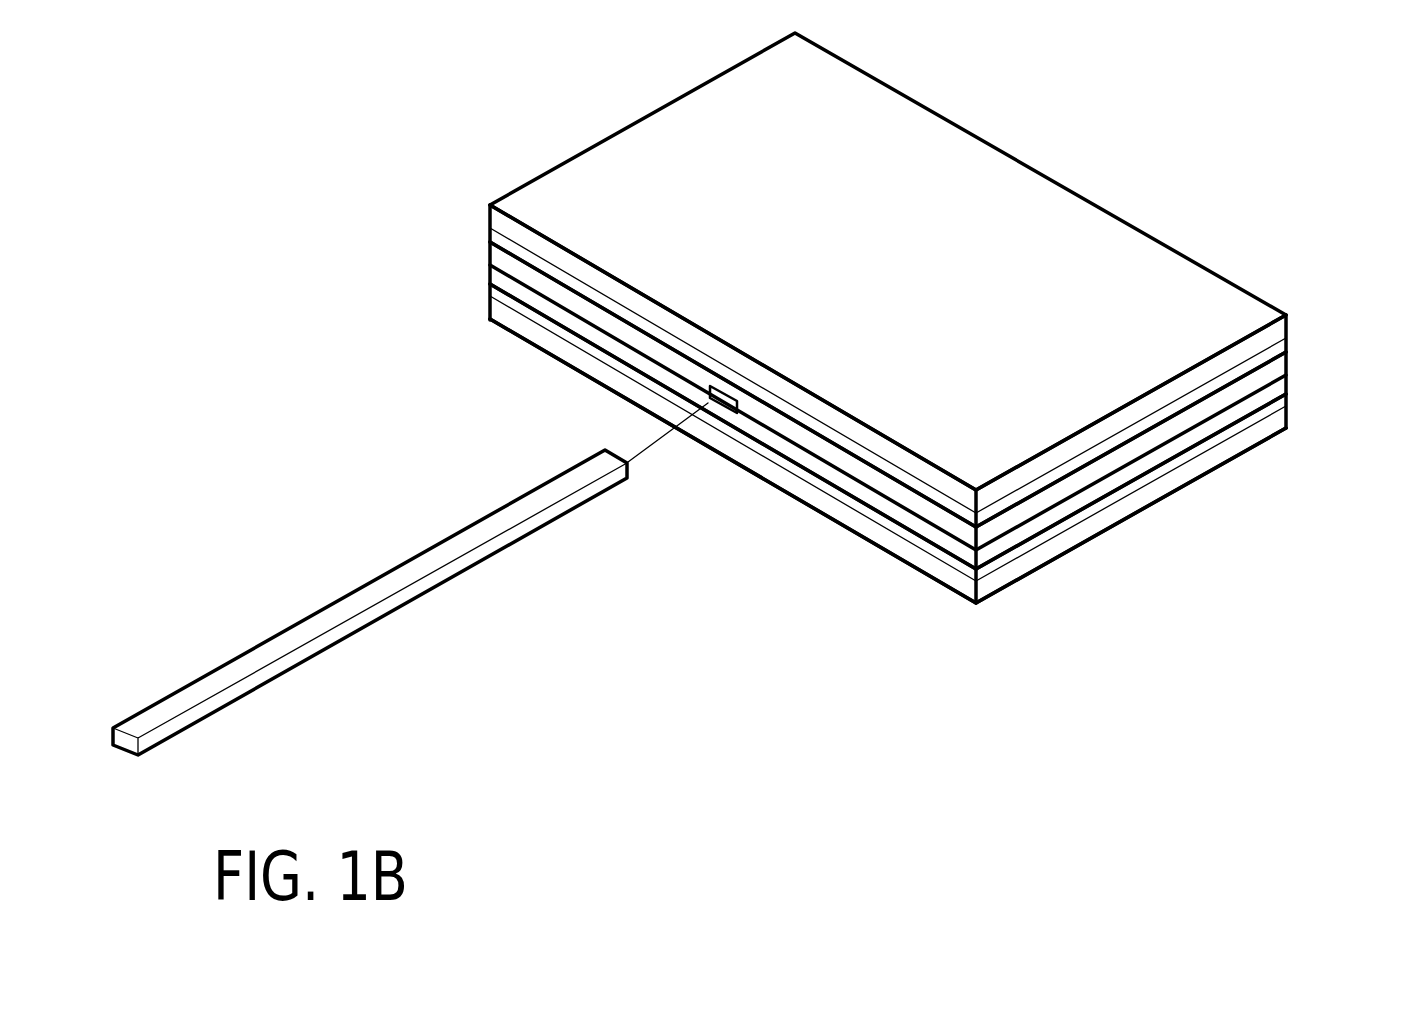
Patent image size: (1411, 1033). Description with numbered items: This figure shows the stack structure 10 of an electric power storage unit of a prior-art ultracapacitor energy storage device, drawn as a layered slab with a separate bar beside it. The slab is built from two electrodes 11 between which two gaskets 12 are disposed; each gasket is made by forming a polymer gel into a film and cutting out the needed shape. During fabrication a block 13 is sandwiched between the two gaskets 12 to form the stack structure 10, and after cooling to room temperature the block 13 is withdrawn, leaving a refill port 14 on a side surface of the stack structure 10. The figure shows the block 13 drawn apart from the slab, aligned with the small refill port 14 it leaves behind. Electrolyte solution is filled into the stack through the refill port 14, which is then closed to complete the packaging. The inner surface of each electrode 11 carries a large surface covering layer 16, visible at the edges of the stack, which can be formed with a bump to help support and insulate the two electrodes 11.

The stack structure 10 is at (378, 130).
The electrode 11 is at (478, 202).
The gasket 12 is at (497, 258).
The block 13 is at (347, 615).
The refill port 14 is at (722, 413).
The large surface covering layer 16 is at (1270, 353).